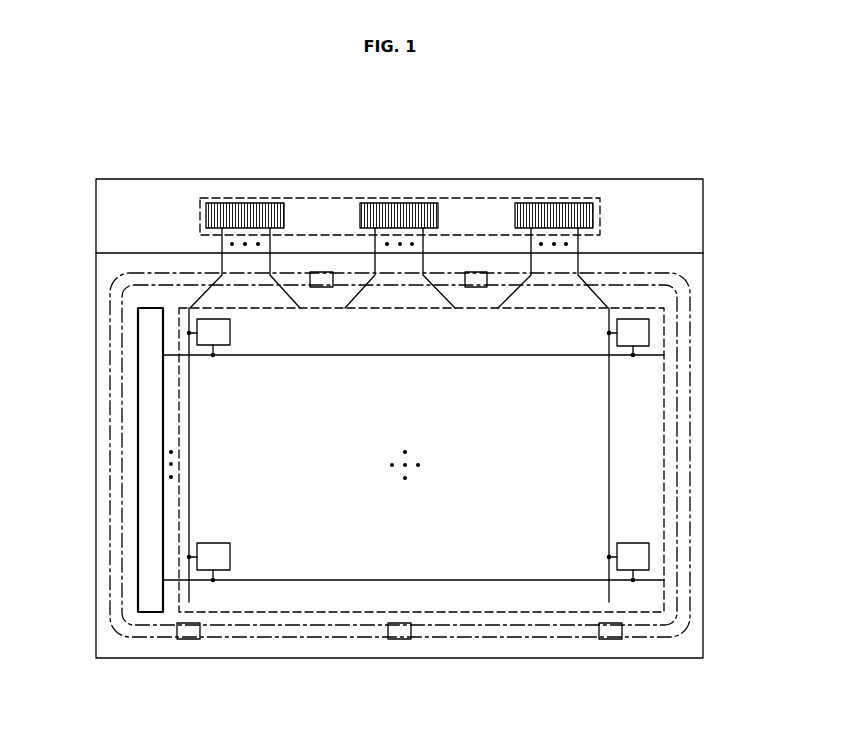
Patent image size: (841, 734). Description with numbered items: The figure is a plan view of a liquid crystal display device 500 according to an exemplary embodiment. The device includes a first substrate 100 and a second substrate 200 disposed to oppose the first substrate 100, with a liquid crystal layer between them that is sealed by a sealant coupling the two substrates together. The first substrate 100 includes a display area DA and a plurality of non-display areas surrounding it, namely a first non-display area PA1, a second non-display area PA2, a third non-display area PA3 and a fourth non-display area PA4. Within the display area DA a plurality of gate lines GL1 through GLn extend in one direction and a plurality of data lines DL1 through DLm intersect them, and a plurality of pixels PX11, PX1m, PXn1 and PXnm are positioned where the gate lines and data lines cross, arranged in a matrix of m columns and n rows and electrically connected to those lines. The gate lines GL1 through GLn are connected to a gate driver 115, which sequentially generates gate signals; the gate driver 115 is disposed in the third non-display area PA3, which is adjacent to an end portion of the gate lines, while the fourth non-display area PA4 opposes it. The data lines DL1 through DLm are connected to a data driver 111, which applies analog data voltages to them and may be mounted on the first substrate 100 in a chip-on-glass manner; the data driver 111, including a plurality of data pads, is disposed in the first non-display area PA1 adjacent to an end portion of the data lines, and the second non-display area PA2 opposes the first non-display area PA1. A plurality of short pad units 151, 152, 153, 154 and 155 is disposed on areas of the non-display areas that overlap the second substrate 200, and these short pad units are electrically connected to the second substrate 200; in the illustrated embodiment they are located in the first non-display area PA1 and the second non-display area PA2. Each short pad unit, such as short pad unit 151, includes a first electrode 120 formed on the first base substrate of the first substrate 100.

The liquid crystal display device 500 is at (396, 150).
The first substrate 100 is at (96, 205).
The second substrate 200 is at (115, 253).
The data driver 111 is at (225, 197).
The short pad unit 151 is at (322, 272).
The short pad unit 152 is at (476, 272).
The short pad unit 153 is at (188, 645).
The short pad unit 154 is at (399, 645).
The short pad unit 155 is at (611, 645).
The gate driver 115 is at (138, 428).
The first electrode 120 is at (110, 478).
The display area DA is at (658, 462).
The first non-display area PA1 is at (650, 196).
The second non-display area PA2 is at (491, 648).
The third non-display area PA3 is at (130, 548).
The fourth non-display area PA4 is at (670, 526).
The gate line GL1 is at (305, 358).
The gate line GLn is at (297, 578).
The data line DL1 is at (190, 455).
The data line DLm is at (608, 455).
The pixel PX11 is at (210, 338).
The pixel PX1m is at (631, 338).
The pixel PXn1 is at (210, 562).
The pixel PXnm is at (631, 562).